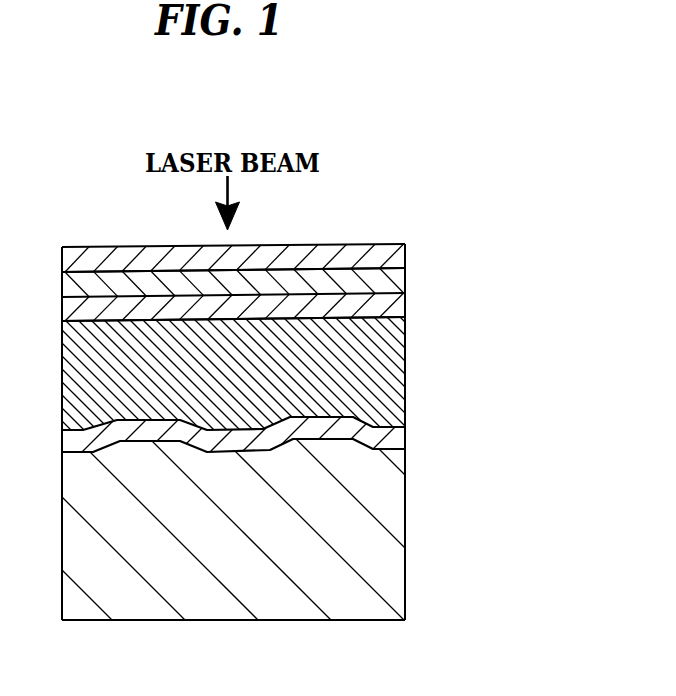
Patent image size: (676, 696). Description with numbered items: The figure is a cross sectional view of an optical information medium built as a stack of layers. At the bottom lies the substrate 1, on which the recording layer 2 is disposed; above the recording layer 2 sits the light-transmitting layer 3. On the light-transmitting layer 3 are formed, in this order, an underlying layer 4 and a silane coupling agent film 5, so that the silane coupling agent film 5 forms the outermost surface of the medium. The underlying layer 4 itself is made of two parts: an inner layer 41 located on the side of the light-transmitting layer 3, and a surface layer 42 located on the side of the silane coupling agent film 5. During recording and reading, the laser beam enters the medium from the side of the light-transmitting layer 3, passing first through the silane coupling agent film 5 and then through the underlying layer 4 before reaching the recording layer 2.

The substrate 1 is at (405, 480).
The recording layer 2 is at (405, 433).
The light-transmitting layer 3 is at (405, 397).
The underlying layer 4 is at (535, 282).
The inner layer 41 is at (405, 302).
The surface layer 42 is at (405, 283).
The silane coupling agent film 5 is at (405, 256).